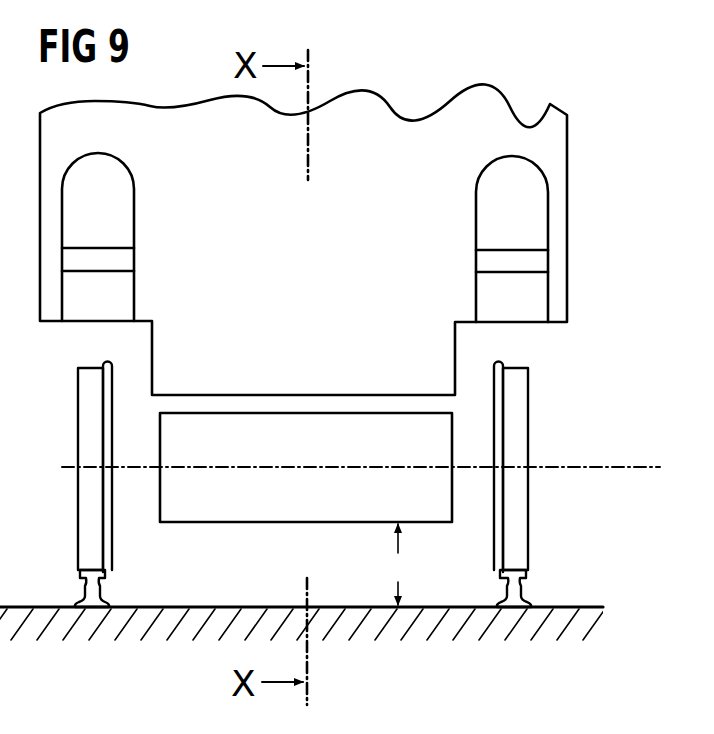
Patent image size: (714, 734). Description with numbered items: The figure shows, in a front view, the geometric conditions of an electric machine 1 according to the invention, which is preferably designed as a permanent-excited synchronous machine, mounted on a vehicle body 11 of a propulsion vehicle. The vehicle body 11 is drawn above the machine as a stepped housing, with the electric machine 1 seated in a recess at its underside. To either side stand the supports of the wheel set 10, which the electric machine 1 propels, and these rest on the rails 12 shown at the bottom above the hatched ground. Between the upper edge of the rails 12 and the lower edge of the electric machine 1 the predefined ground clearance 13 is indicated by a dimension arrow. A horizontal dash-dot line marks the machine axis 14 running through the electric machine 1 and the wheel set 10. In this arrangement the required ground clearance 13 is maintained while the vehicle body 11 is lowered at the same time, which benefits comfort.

The electric machine 1 is at (238, 507).
The wheel set 10 is at (518, 392).
The vehicle body 11 is at (322, 393).
The rails 12 is at (78, 581).
The ground clearance 13 is at (397, 564).
The machine axis 14 is at (371, 448).